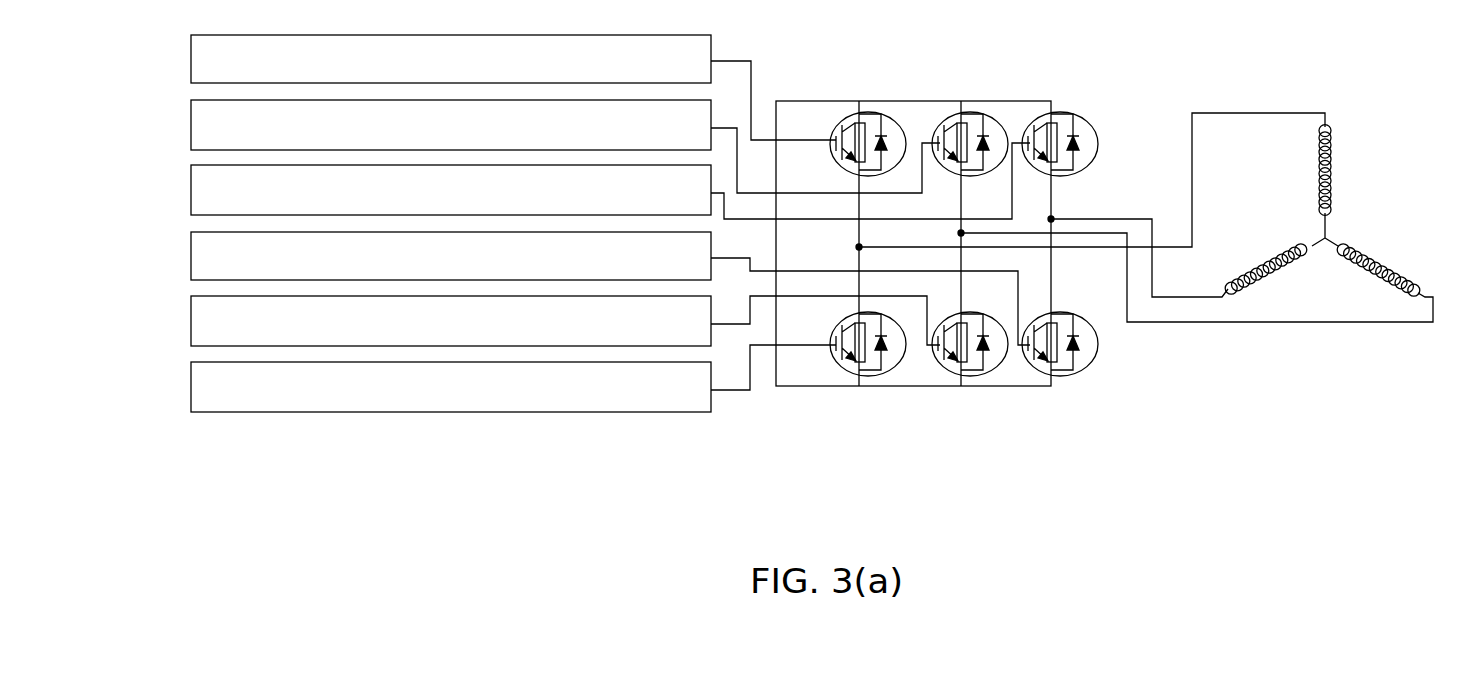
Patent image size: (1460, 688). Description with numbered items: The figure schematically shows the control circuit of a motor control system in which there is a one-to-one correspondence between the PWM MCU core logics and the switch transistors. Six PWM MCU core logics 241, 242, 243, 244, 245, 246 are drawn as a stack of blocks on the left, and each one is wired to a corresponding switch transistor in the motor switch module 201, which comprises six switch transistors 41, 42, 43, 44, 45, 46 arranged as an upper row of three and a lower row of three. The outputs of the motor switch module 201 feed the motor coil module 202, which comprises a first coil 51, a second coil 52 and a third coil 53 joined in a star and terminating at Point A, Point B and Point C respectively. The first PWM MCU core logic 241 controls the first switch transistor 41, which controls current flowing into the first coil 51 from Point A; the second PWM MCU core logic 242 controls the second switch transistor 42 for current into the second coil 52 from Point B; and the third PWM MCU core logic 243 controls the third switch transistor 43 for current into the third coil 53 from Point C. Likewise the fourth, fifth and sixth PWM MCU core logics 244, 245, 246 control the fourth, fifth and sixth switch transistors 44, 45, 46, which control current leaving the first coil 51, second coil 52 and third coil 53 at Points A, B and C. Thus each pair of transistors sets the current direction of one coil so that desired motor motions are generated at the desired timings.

The first PWM MCU core logic 241 is at (191, 62).
The second PWM MCU core logic 242 is at (191, 127).
The third PWM MCU core logic 243 is at (191, 192).
The fourth PWM MCU core logic 244 is at (191, 386).
The fifth PWM MCU core logic 245 is at (191, 321).
The sixth PWM MCU core logic 246 is at (191, 255).
The motor switch module 201 is at (1083, 94).
The motor coil module 202 is at (1370, 119).
The first switch transistor 41 is at (838, 124).
The second switch transistor 42 is at (942, 124).
The third switch transistor 43 is at (1032, 124).
The fourth switch transistor 44 is at (897, 367).
The fifth switch transistor 45 is at (998, 367).
The sixth switch transistor 46 is at (1093, 367).
The first coil 51 is at (1335, 167).
The second coil 52 is at (1369, 252).
The third coil 53 is at (1275, 268).